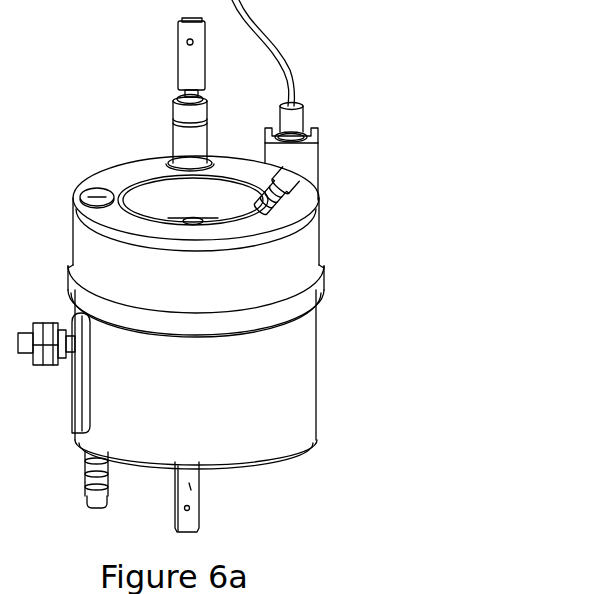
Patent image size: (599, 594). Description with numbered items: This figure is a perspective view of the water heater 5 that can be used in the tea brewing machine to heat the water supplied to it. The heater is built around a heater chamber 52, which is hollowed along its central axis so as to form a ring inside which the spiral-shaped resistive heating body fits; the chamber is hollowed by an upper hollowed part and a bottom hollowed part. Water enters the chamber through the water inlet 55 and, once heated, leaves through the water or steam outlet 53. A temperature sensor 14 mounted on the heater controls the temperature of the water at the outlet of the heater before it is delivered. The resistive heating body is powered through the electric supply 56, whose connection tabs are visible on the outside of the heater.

The water heater 5 is at (462, 203).
The temperature sensor 14 is at (311, 159).
The heater chamber 52 is at (322, 335).
The water or steam outlet 53 is at (284, 204).
The water inlet 55 is at (82, 482).
The electric supply 56 is at (172, 50).